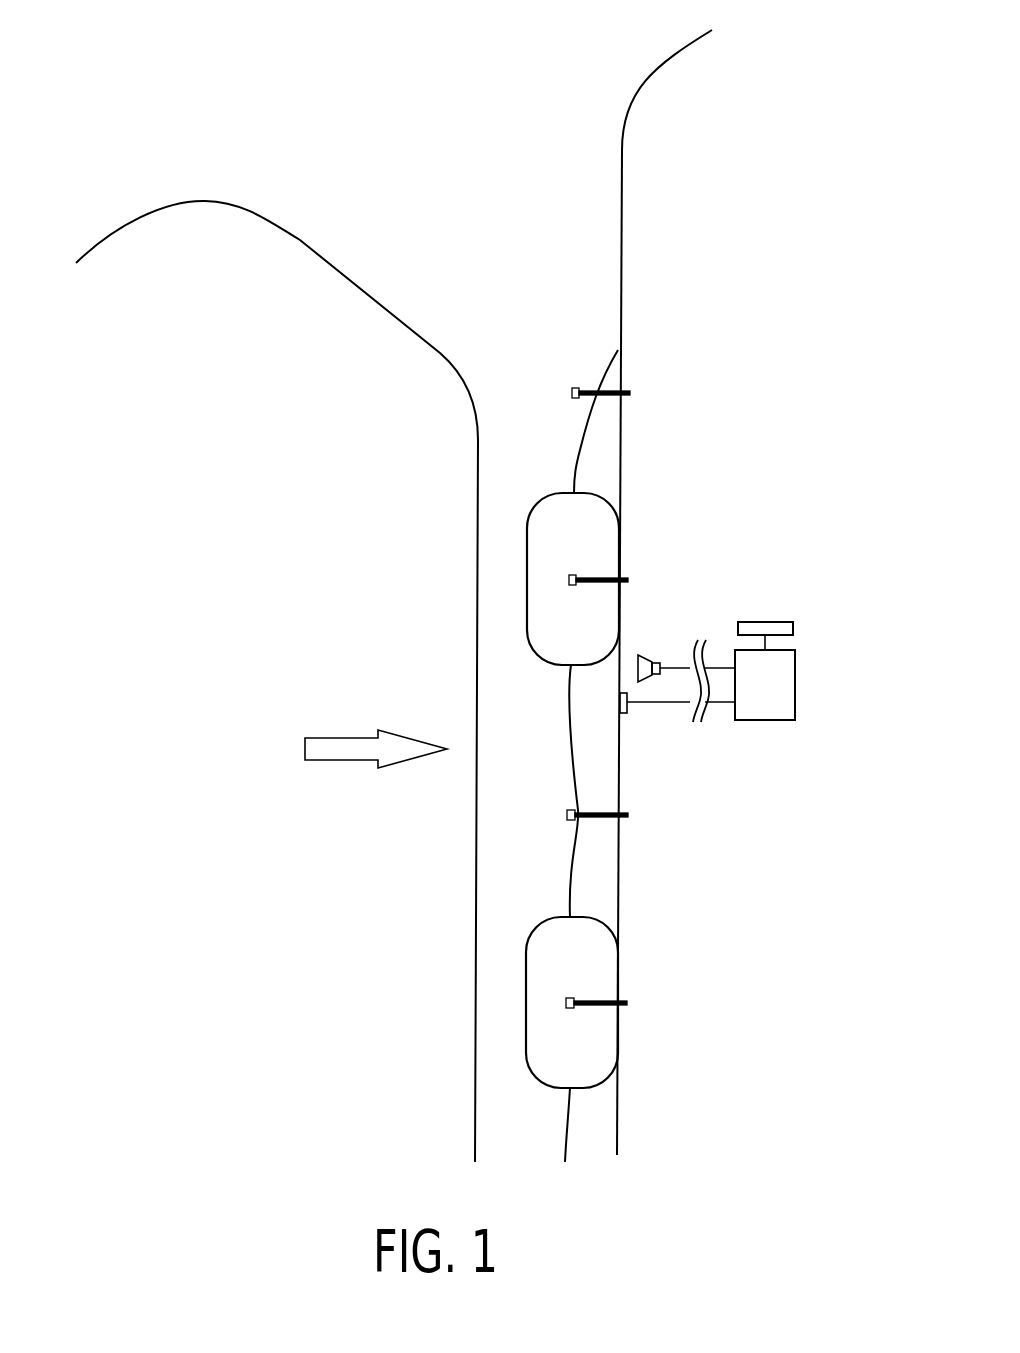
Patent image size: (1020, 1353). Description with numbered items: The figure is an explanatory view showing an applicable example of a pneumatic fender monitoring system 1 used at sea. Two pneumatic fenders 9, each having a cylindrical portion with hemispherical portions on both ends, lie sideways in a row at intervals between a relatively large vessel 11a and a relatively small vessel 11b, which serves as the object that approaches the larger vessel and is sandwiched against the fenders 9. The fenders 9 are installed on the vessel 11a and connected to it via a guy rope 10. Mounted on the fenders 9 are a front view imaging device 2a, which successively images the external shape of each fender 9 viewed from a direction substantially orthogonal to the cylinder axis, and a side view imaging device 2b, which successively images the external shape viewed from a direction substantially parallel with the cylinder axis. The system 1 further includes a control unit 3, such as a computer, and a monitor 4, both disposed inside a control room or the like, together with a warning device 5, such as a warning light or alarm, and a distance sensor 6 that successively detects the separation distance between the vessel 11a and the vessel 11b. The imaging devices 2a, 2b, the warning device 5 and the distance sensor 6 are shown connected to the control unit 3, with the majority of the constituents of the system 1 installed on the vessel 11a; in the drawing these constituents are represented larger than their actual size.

The pneumatic fender monitoring system 1 is at (683, 488).
The front view imaging device 2a is at (569, 578).
The side view imaging device 2b is at (572, 388).
The control unit 3 is at (762, 713).
The monitor 4 is at (766, 630).
The warning device 5 is at (654, 658).
The distance sensor 6 is at (630, 706).
The pneumatic fender 9 is at (534, 595).
The guy rope 10 is at (574, 472).
The vessel 11a is at (645, 243).
The another vessel 11b is at (350, 320).